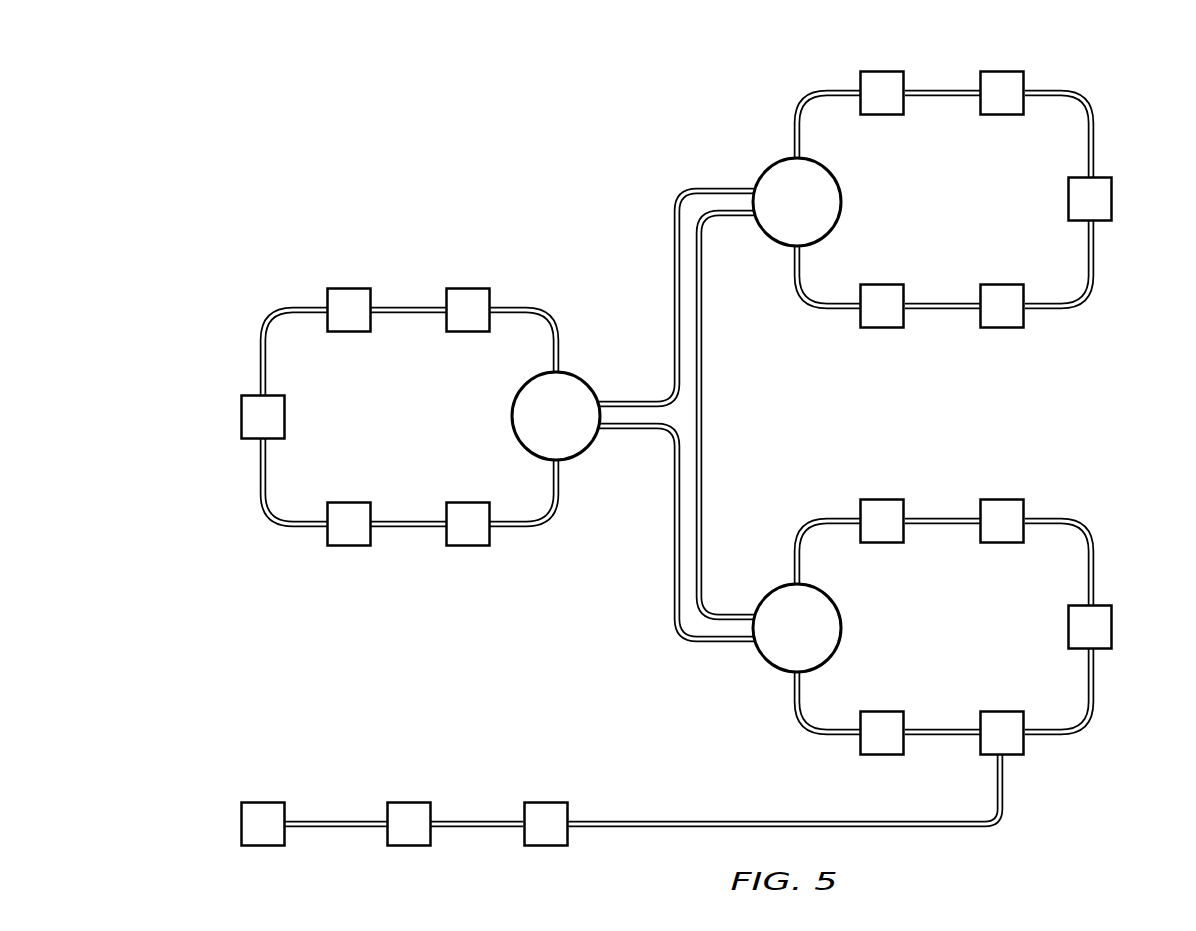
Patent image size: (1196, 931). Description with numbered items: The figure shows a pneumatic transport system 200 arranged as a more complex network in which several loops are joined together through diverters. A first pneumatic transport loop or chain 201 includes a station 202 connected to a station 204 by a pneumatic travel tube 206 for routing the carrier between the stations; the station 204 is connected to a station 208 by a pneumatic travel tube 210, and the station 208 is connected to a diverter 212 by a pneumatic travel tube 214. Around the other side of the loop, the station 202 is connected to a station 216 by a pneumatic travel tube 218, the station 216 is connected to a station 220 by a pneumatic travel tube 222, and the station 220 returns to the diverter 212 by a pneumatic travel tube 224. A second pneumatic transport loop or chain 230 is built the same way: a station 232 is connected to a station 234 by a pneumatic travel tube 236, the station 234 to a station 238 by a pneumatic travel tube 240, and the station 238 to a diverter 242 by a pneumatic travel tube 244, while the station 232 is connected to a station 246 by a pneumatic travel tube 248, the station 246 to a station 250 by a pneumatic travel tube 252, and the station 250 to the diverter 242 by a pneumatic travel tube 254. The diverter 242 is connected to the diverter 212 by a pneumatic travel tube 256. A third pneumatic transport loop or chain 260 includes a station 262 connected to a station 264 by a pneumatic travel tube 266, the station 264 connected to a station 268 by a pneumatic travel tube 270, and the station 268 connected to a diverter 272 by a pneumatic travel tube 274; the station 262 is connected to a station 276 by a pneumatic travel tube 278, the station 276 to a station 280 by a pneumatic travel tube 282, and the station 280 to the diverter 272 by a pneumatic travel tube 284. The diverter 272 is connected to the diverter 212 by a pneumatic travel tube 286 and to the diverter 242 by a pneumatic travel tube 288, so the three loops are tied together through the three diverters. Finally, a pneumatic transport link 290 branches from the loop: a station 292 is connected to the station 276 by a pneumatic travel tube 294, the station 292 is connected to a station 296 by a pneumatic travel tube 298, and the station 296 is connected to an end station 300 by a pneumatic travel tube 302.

The transport system 200 is at (376, 84).
The pneumatic transport loop 201 is at (247, 268).
The station 202 is at (240, 414).
The station 204 is at (345, 289).
The pneumatic travel tube 206 is at (260, 354).
The station 208 is at (462, 289).
The pneumatic travel tube 210 is at (420, 313).
The diverter 212 is at (539, 430).
The pneumatic travel tube 214 is at (560, 352).
The station 216 is at (345, 546).
The pneumatic travel tube 218 is at (260, 484).
The station 220 is at (462, 546).
The pneumatic travel tube 222 is at (420, 520).
The pneumatic travel tube 224 is at (560, 486).
The pneumatic transport loop 230 is at (1105, 51).
The station 232 is at (1113, 192).
The station 234 is at (1008, 72).
The pneumatic travel tube 236 is at (1094, 138).
The station 238 is at (890, 72).
The pneumatic travel tube 240 is at (930, 97).
The diverter 242 is at (780, 216).
The pneumatic travel tube 244 is at (793, 138).
The station 246 is at (1010, 330).
The pneumatic travel tube 248 is at (1094, 264).
The station 250 is at (892, 330).
The pneumatic travel tube 252 is at (932, 303).
The pneumatic travel tube 254 is at (793, 264).
The pneumatic travel tube 256 is at (672, 286).
The pneumatic transport loop 260 is at (1105, 778).
The station 262 is at (1113, 622).
The station 264 is at (1008, 500).
The pneumatic travel tube 266 is at (1094, 566).
The station 268 is at (890, 500).
The pneumatic travel tube 270 is at (930, 525).
The diverter 272 is at (780, 642).
The pneumatic travel tube 274 is at (793, 566).
The station 276 is at (1008, 711).
The pneumatic travel tube 278 is at (1094, 689).
The station 280 is at (892, 757).
The pneumatic travel tube 282 is at (932, 729).
The pneumatic travel tube 284 is at (793, 689).
The pneumatic travel tube 286 is at (672, 540).
The pneumatic travel tube 288 is at (702, 412).
The pneumatic transport link 290 is at (219, 766).
The station 292 is at (537, 848).
The pneumatic travel tube 294 is at (637, 820).
The station 296 is at (400, 848).
The pneumatic travel tube 298 is at (480, 820).
The station 300 is at (257, 848).
The pneumatic travel tube 302 is at (343, 820).